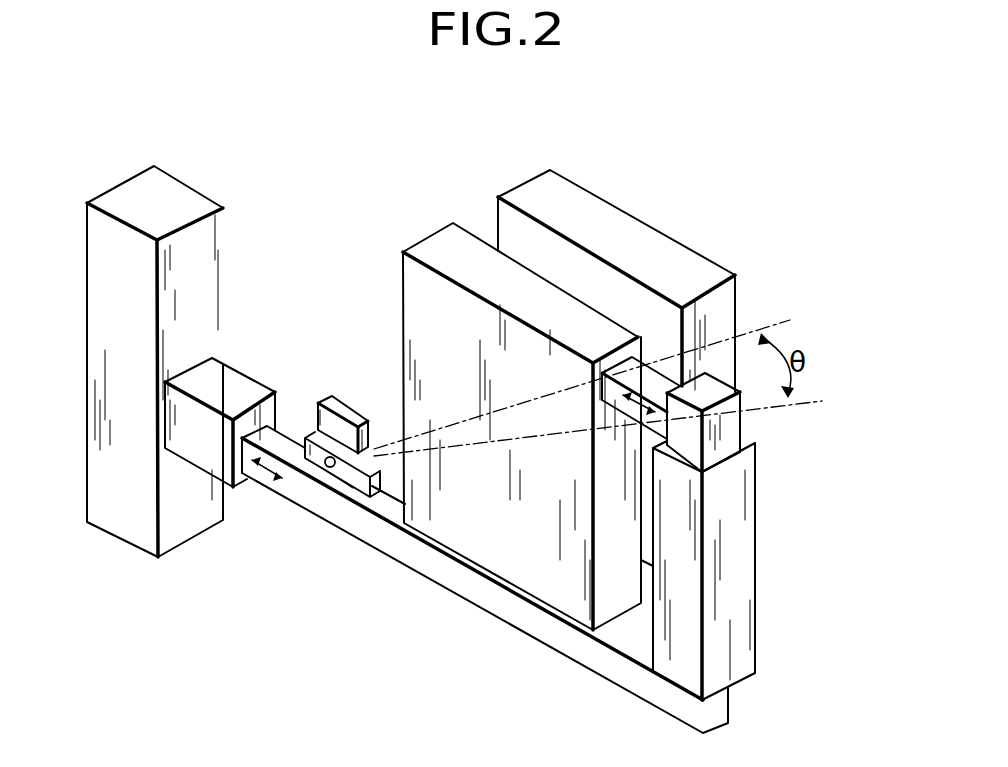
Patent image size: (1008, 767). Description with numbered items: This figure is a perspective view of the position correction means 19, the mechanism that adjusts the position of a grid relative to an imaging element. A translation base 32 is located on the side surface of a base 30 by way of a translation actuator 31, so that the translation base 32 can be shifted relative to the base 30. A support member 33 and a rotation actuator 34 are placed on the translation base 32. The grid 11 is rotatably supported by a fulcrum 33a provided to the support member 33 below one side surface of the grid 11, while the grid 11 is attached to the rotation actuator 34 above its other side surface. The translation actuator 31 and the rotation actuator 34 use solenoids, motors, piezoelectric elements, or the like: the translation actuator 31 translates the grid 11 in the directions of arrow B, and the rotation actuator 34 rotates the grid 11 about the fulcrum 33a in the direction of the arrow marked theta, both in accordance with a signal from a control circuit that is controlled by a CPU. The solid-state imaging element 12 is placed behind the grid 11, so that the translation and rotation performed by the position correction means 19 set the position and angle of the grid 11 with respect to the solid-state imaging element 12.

The grid 11 is at (421, 281).
The solid-state imaging element 12 is at (646, 249).
The position correction means 19 is at (470, 643).
The base 30 is at (100, 281).
The translation actuator 31 is at (203, 440).
The translation base 32 is at (598, 660).
The support member 33 is at (342, 413).
The fulcrum 33a is at (331, 468).
The rotation actuator 34 is at (723, 435).